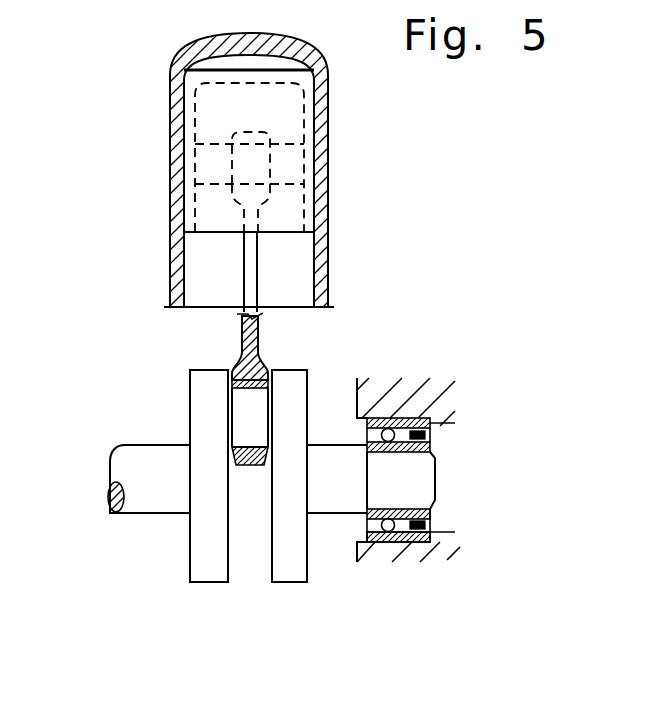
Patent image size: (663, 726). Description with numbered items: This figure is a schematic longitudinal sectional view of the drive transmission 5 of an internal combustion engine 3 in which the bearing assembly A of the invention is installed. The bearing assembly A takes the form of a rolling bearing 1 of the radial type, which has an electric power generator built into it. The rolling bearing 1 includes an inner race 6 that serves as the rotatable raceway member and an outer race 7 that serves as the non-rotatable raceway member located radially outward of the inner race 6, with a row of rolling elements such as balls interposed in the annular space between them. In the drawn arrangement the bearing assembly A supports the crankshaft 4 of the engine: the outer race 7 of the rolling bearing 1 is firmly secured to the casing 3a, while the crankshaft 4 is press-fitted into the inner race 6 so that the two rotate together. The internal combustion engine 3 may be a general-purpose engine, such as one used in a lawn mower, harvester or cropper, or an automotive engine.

The rolling bearing 1 is at (367, 524).
The internal combustion engine 3 is at (163, 174).
The casing 3a is at (396, 395).
The crankshaft 4 is at (158, 453).
The drive transmission 5 is at (184, 362).
The inner race 6 is at (420, 500).
The outer race 7 is at (403, 542).
The bearing assembly A is at (431, 511).